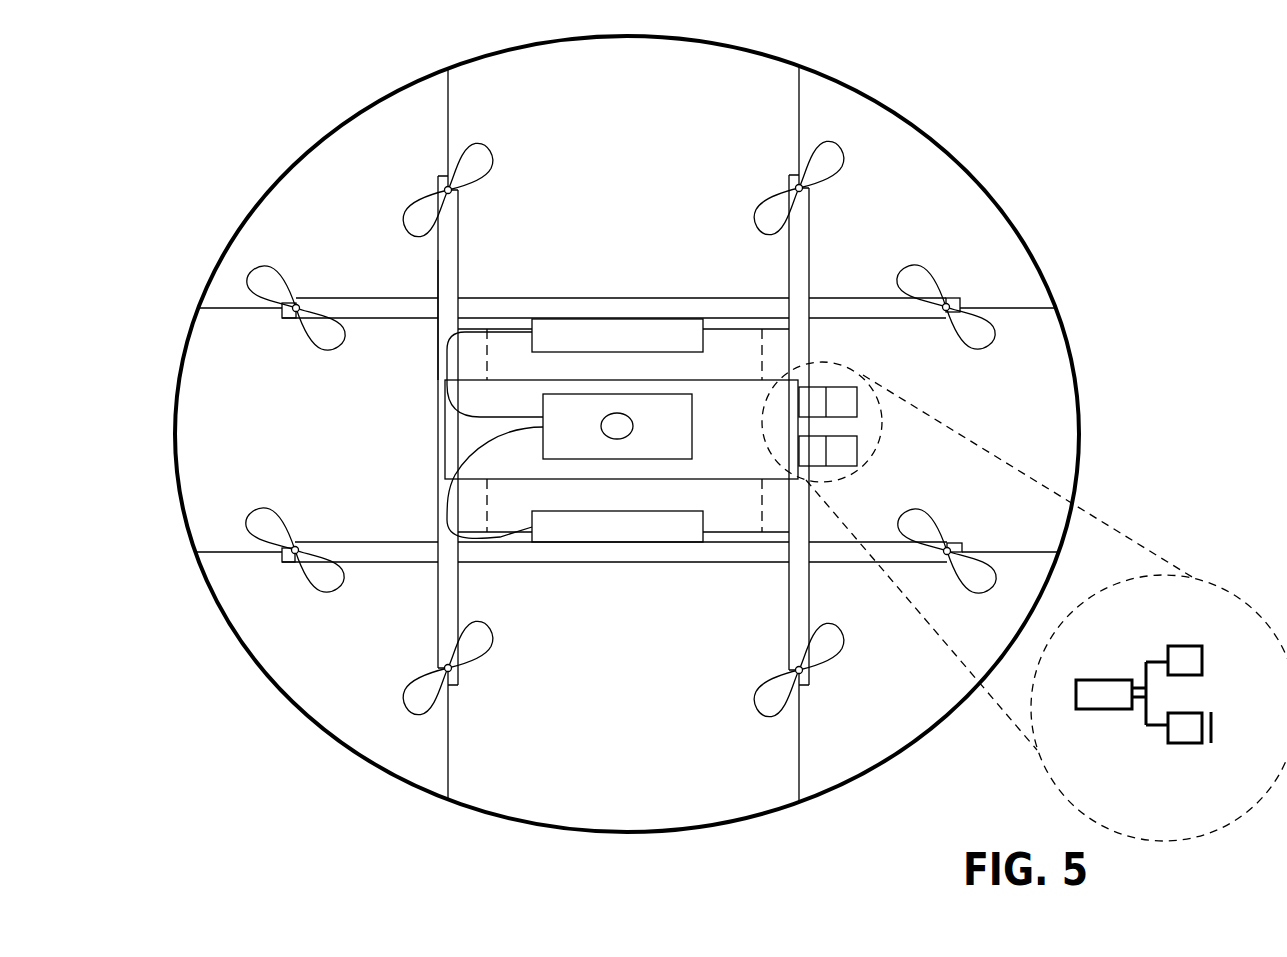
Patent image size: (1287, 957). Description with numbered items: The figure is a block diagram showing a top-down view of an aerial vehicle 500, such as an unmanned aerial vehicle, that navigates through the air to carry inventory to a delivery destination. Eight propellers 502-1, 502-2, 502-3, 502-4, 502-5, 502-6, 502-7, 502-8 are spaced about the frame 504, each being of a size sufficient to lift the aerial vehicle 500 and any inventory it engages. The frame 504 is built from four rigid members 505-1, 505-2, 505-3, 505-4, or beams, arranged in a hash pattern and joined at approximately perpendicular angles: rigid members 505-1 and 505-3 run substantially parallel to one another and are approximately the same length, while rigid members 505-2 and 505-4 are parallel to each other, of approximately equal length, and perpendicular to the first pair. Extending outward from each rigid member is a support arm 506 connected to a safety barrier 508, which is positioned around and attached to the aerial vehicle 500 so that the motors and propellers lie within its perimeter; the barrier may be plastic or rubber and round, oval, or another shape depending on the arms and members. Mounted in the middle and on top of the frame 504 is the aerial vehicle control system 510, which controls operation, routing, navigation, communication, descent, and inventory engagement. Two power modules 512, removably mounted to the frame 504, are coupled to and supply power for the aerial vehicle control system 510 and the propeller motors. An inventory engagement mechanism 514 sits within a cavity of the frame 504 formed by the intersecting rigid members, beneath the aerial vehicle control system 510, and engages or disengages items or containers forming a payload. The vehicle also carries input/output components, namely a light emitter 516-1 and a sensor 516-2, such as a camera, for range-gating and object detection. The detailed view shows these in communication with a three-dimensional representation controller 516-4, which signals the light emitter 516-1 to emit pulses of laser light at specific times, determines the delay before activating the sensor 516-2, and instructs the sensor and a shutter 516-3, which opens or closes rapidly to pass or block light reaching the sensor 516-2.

The aerial vehicle 500 is at (1136, 125).
The propeller 502-1 is at (490, 157).
The propeller 502-2 is at (845, 160).
The propeller 502-3 is at (987, 348).
The propeller 502-4 is at (982, 497).
The propeller 502-5 is at (885, 637).
The propeller 502-6 is at (490, 633).
The propeller 502-7 is at (282, 510).
The propeller 502-8 is at (282, 265).
The frame 504 is at (438, 265).
The rigid member 505-1 is at (823, 298).
The rigid member 505-2 is at (809, 250).
The rigid member 505-3 is at (838, 542).
The rigid member 505-4 is at (459, 258).
The support arm 506 is at (447, 107).
The safety barrier 508 is at (930, 138).
The aerial vehicle control system 510 is at (757, 470).
The power module 512 is at (599, 347).
The inventory engagement mechanism 514 is at (720, 348).
The light emitter 516-1 is at (853, 404).
The sensor 516-2 is at (852, 460).
The shutter 516-3 is at (1247, 732).
The three-dimensional representation controller 516-4 is at (1100, 703).